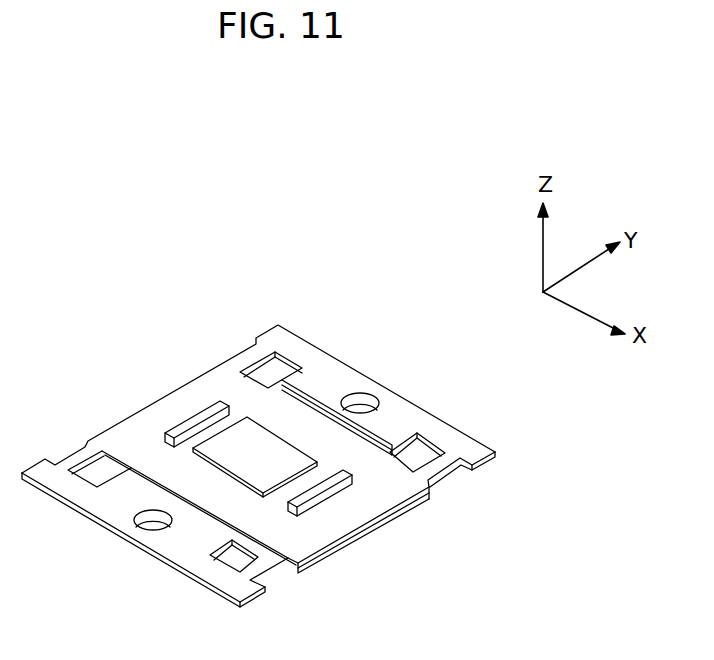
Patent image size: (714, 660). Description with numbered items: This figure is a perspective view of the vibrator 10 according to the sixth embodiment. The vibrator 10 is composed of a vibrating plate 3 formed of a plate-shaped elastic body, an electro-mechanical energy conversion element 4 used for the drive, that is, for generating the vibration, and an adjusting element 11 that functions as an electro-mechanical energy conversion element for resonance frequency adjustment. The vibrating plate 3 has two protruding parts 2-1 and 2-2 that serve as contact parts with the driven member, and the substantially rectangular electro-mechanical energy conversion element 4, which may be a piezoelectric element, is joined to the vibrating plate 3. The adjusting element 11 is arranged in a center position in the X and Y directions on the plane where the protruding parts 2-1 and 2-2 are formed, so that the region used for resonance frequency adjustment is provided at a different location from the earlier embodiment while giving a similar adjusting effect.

The vibrator 10 is at (150, 213).
The protruding part 2-1 is at (192, 415).
The protruding part 2-2 is at (332, 487).
The vibrating plate 3 is at (293, 428).
The electro-mechanical energy conversion element 4 is at (323, 558).
The adjusting element 11 is at (250, 462).